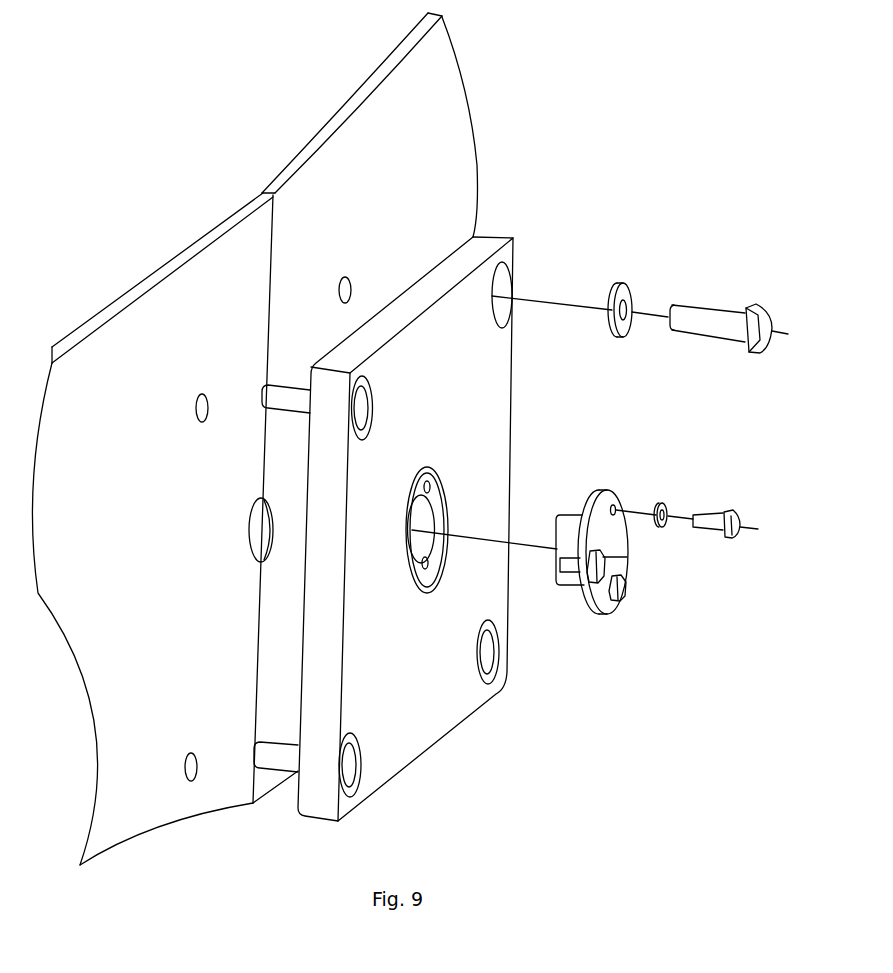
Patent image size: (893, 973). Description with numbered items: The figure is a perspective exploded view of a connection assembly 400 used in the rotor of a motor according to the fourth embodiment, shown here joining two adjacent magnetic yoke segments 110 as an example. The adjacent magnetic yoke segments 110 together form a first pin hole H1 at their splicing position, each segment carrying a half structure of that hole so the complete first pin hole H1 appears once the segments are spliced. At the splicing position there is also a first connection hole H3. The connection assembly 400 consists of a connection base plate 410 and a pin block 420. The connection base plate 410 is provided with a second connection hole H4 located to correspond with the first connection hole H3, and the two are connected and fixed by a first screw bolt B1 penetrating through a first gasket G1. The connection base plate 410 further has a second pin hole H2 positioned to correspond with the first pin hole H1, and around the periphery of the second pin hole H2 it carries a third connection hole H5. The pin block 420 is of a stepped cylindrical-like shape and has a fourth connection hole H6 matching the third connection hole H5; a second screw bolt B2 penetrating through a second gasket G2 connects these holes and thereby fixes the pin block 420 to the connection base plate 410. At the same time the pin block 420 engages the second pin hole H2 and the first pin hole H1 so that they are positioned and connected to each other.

The magnetic yoke segment 110 is at (358, 153).
The connection assembly 400 is at (523, 546).
The connection base plate 410 is at (413, 705).
The pin block 420 is at (597, 592).
The first pin hole H1 is at (250, 535).
The second pin hole H2 is at (417, 520).
The first connection hole H3 is at (350, 288).
The second connection hole H4 is at (515, 290).
The third connection hole H5 is at (430, 485).
The fourth connection hole H6 is at (615, 508).
The first gasket G1 is at (633, 297).
The second gasket G2 is at (667, 510).
The first screw bolt B1 is at (712, 323).
The second screw bolt B2 is at (707, 520).